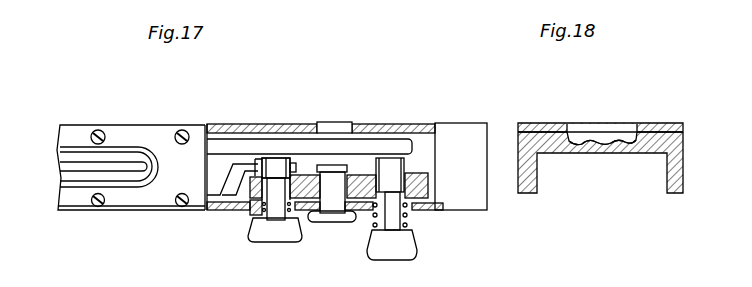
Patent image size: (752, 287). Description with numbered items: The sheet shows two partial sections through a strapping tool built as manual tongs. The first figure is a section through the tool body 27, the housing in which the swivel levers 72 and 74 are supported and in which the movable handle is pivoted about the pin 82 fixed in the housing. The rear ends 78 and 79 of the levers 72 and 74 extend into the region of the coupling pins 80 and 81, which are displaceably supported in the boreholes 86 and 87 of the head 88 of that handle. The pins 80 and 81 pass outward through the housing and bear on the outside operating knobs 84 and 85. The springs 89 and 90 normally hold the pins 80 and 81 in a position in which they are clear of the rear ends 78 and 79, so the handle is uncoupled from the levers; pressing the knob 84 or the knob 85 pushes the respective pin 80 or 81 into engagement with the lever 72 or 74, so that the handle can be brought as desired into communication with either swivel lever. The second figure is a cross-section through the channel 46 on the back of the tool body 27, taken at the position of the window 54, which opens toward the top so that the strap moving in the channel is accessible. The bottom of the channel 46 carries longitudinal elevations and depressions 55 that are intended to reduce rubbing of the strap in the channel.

In FIG. 17, the channel 46 is at (75, 163).
In FIG. 18, the channel 46 is at (608, 140).
In FIG. 17, the lever 74 is at (166, 195).
In FIG. 17, the rear end of lever 72 78 is at (416, 131).
In FIG. 17, the lever 72 is at (227, 140).
In FIG. 17, the tool body 27 is at (210, 188).
In FIG. 17, the rear end of lever 74 79 is at (261, 158).
In FIG. 17, the coupling pin 81 is at (275, 163).
In FIG. 17, the head of handle 29 88 is at (357, 175).
In FIG. 17, the borehole 86 is at (428, 183).
In FIG. 17, the operating knob 85 is at (260, 238).
In FIG. 17, the pin 82 is at (329, 194).
In FIG. 17, the coupling pin 80 is at (392, 168).
In FIG. 17, the operating knob 84 is at (386, 244).
In FIG. 17, the spring 89 is at (408, 213).
In FIG. 17, the borehole 87 is at (302, 211).
In FIG. 17, the spring 90 is at (256, 206).
In FIG. 18, the window 54 is at (582, 130).
In FIG. 18, the elevations and depressions 55 is at (600, 144).